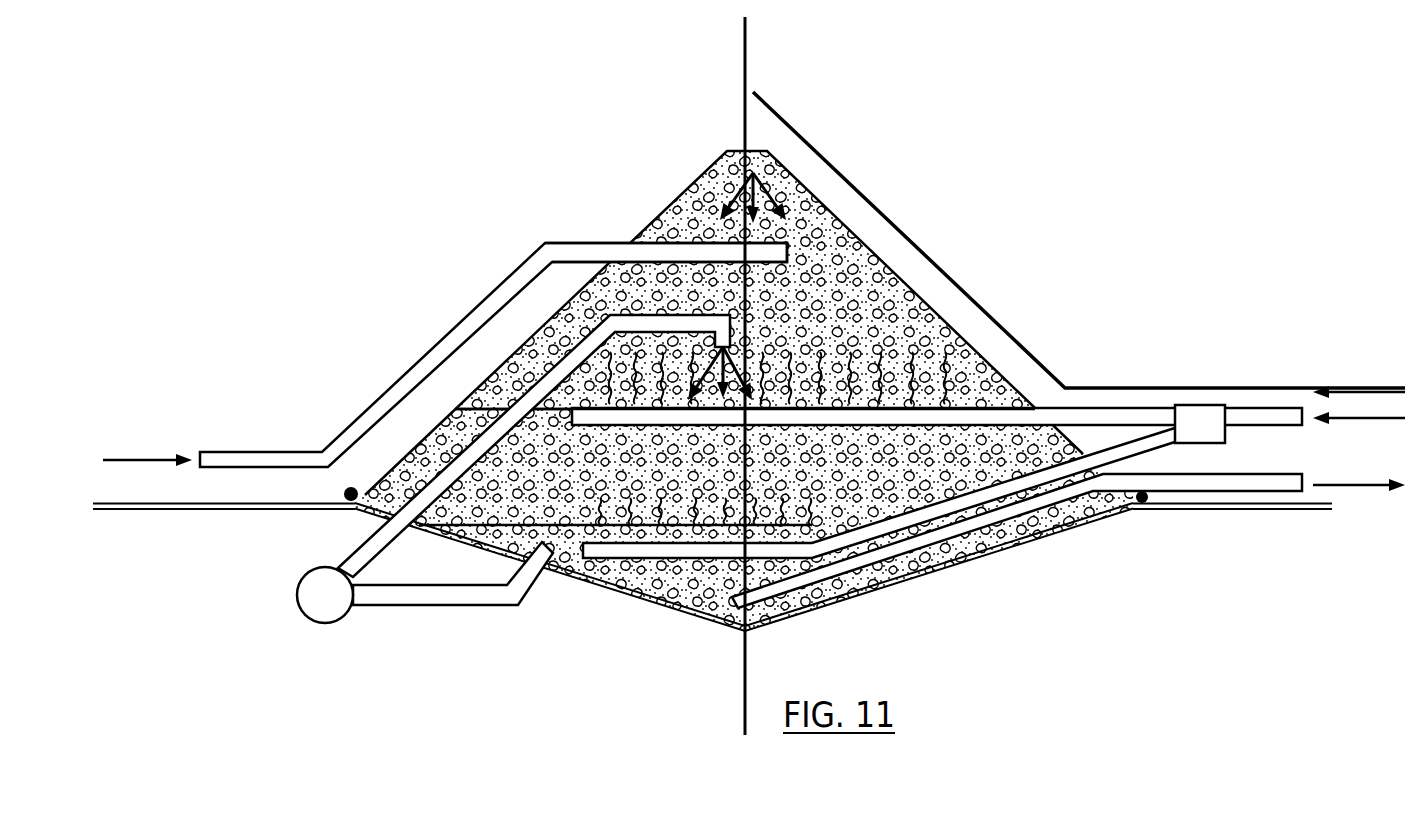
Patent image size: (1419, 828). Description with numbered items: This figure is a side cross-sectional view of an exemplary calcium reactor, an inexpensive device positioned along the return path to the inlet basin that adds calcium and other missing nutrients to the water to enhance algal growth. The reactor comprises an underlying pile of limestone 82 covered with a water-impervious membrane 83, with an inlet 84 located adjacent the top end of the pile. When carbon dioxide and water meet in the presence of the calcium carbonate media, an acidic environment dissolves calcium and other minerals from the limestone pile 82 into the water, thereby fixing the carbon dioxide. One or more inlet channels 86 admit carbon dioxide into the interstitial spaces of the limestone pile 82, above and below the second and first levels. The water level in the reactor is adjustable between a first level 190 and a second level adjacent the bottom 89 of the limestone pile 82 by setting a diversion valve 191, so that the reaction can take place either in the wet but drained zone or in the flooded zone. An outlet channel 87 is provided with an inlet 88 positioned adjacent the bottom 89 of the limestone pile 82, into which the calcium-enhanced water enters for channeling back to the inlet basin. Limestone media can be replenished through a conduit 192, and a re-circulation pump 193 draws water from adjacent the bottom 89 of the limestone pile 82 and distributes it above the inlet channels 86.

The pile of limestone 82 is at (887, 318).
The water-impervious membrane 83 is at (536, 330).
The inlet 84 is at (737, 150).
The inlet channel 86 is at (1020, 422).
The outlet channel 87 is at (807, 578).
The inlet into outlet channel 88 is at (733, 603).
The bottom of limestone pile 89 is at (707, 587).
The first level 190 is at (670, 545).
The diversion valve 191 is at (353, 487).
The conduit 192 is at (420, 372).
The re-circulation pump 193 is at (323, 612).